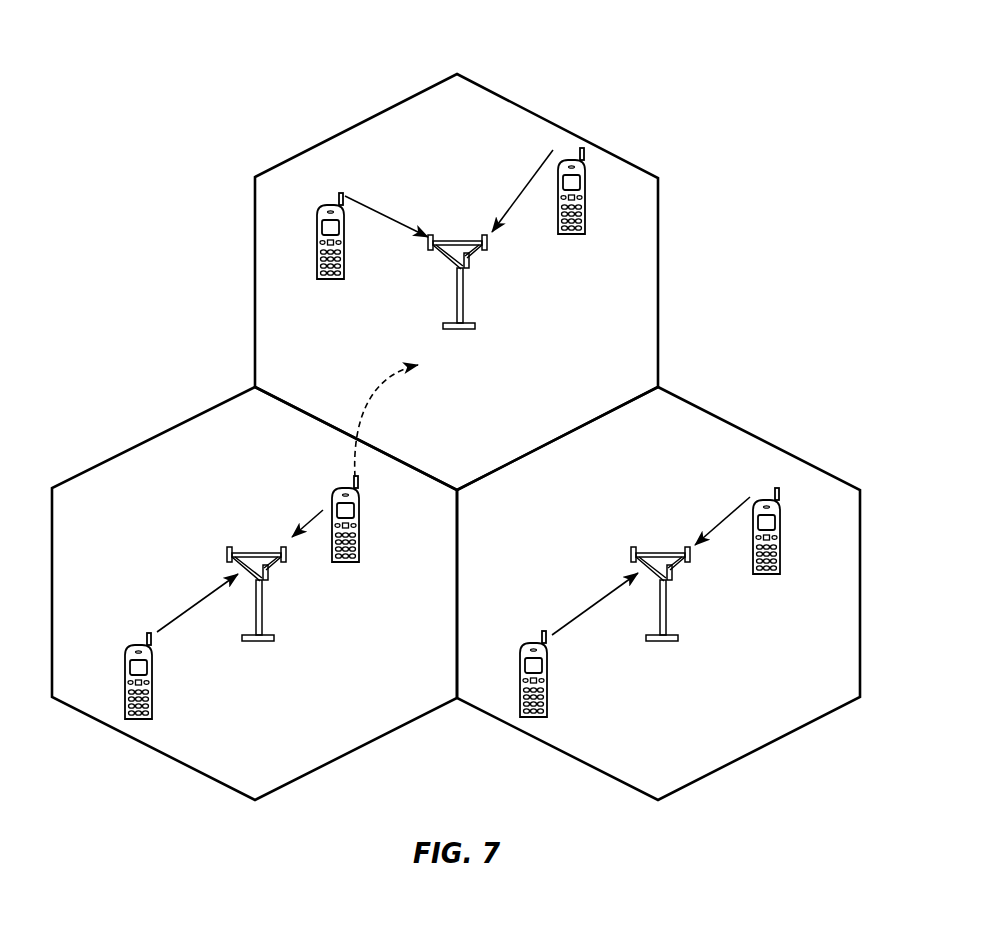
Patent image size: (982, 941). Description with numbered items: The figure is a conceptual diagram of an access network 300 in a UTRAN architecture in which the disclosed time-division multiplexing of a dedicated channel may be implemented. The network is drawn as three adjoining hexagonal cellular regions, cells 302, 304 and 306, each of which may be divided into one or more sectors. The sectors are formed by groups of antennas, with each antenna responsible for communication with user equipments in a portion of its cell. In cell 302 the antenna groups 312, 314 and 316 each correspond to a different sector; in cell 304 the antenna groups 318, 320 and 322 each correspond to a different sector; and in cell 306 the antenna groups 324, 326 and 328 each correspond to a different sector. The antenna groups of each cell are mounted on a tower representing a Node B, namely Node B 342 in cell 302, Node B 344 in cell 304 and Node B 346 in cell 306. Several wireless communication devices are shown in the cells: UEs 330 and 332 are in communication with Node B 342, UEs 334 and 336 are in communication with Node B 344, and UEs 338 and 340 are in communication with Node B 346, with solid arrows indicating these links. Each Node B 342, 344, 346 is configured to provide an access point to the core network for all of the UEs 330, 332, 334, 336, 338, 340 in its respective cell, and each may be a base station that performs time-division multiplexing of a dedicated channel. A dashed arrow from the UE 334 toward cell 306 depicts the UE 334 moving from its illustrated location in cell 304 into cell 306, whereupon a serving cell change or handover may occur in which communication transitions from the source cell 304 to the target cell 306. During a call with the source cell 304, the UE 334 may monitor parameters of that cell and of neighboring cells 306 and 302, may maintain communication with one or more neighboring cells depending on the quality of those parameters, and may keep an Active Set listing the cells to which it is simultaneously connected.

The access network 300 is at (771, 107).
The cell 302 is at (760, 438).
The cell 304 is at (131, 448).
The cell 306 is at (541, 116).
The antenna group 312 is at (631, 548).
The antenna group 314 is at (671, 583).
The antenna group 316 is at (689, 562).
The antenna group 318 is at (267, 583).
The antenna group 320 is at (286, 562).
The antenna group 322 is at (227, 548).
The antenna group 324 is at (428, 251).
The antenna group 326 is at (468, 271).
The antenna group 328 is at (488, 250).
The UE 330 is at (783, 522).
The UE 332 is at (521, 668).
The UE 334 is at (361, 506).
The UE 336 is at (126, 668).
The UE 338 is at (328, 280).
The UE 340 is at (574, 236).
The Node B 342 is at (658, 573).
The Node B 344 is at (255, 573).
The Node B 346 is at (456, 262).